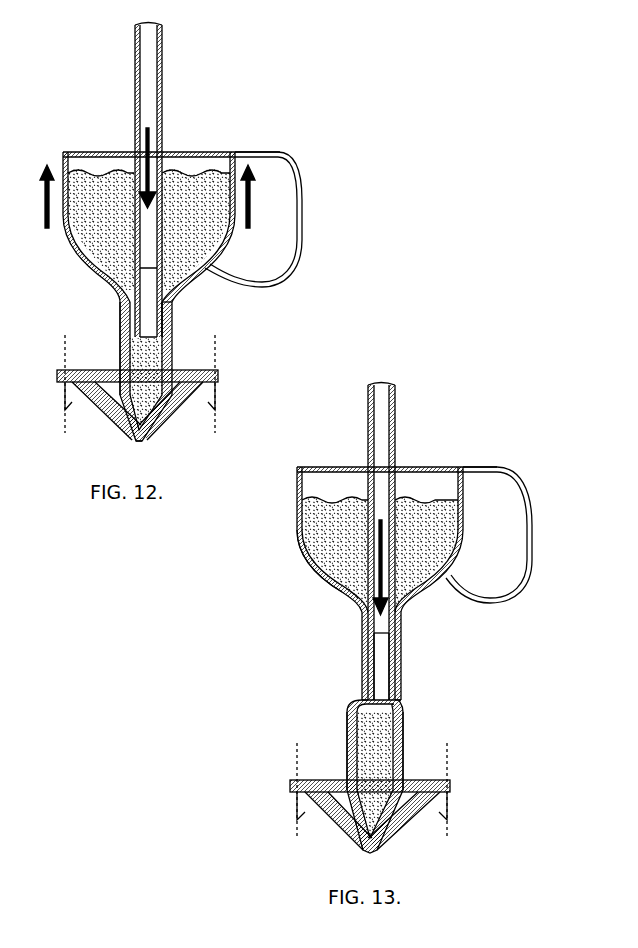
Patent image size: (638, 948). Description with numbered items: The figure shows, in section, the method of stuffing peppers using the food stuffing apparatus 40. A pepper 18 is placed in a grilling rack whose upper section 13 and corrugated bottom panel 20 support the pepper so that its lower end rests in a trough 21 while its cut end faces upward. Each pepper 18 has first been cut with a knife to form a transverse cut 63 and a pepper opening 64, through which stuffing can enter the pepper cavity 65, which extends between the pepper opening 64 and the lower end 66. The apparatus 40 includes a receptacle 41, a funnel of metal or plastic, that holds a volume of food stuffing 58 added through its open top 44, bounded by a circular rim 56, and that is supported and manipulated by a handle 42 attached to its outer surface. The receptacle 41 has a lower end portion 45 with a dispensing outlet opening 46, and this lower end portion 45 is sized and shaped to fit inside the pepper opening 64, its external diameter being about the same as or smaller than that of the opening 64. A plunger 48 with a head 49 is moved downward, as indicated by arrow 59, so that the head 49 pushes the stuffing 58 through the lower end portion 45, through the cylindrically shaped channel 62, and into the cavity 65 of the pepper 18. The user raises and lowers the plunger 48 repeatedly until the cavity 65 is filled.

In FIG. 13, the upper section 13 is at (446, 791).
In FIG. 12, the pepper 18 is at (173, 346).
In FIG. 13, the pepper 18 is at (399, 757).
In FIG. 12, the corrugated bottom panel 20 is at (118, 420).
In FIG. 13, the corrugated bottom panel 20 is at (340, 818).
In FIG. 12, the trough 21 is at (138, 441).
In FIG. 12, the food stuffing apparatus 40 is at (305, 91).
In FIG. 13, the food stuffing apparatus 40 is at (516, 350).
In FIG. 13, the receptacle 41 is at (300, 546).
In FIG. 12, the handle 42 is at (301, 216).
In FIG. 13, the handle 42 is at (531, 541).
In FIG. 12, the open top 44 is at (82, 138).
In FIG. 13, the open top 44 is at (322, 450).
In FIG. 13, the lower end portion 45 is at (399, 681).
In FIG. 13, the dispensing outlet opening 46 is at (396, 695).
In FIG. 12, the plunger 48 is at (163, 55).
In FIG. 13, the plunger 48 is at (396, 425).
In FIG. 12, the head 49 is at (140, 294).
In FIG. 13, the head 49 is at (377, 665).
In FIG. 12, the circular rim 56 is at (206, 150).
In FIG. 13, the circular rim 56 is at (432, 463).
In FIG. 12, the food stuffing 58 is at (178, 170).
In FIG. 12, the arrow 59 is at (140, 186).
In FIG. 13, the arrow 59 is at (372, 598).
In FIG. 13, the channel 62 is at (399, 656).
In FIG. 12, the transverse cut 63 is at (119, 306).
In FIG. 13, the transverse cut 63 is at (350, 716).
In FIG. 12, the pepper opening 64 is at (170, 300).
In FIG. 13, the pepper opening 64 is at (351, 707).
In FIG. 12, the cavity 65 is at (161, 326).
In FIG. 12, the lower end 66 is at (148, 414).
In FIG. 13, the lower end 66 is at (374, 816).